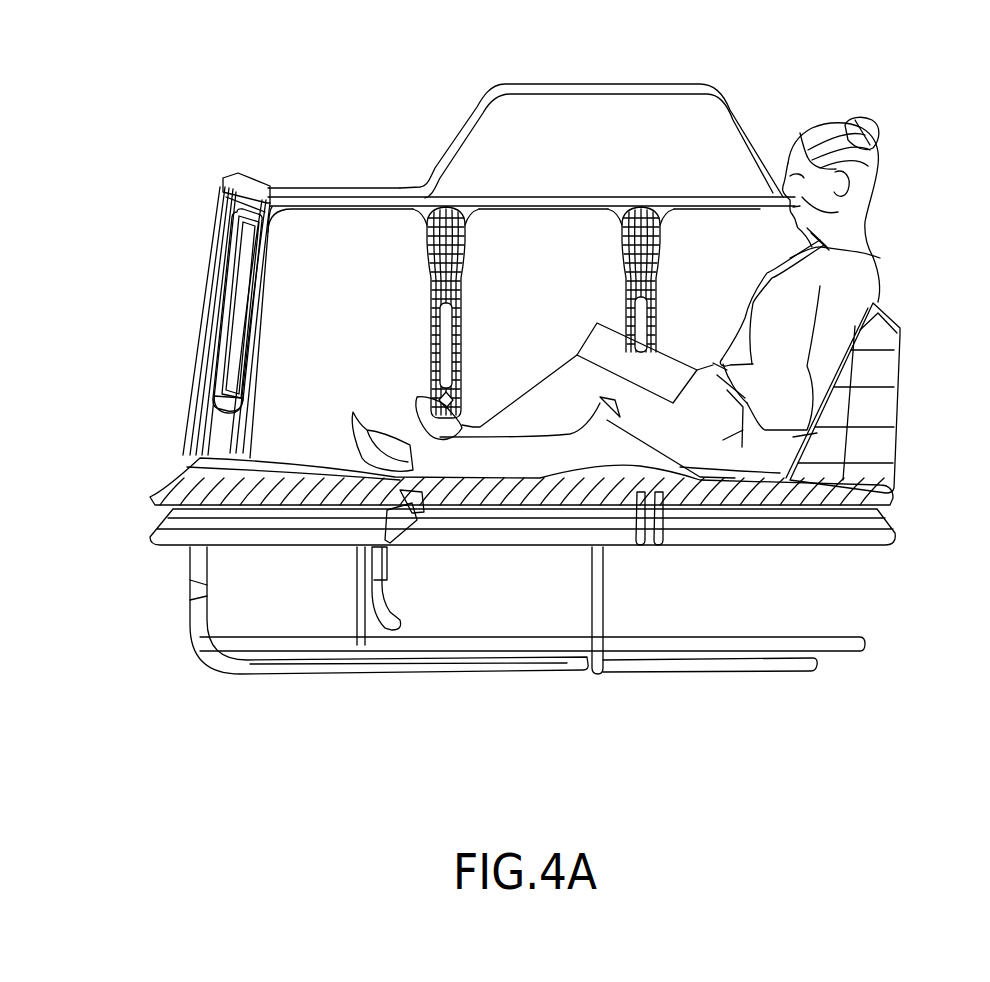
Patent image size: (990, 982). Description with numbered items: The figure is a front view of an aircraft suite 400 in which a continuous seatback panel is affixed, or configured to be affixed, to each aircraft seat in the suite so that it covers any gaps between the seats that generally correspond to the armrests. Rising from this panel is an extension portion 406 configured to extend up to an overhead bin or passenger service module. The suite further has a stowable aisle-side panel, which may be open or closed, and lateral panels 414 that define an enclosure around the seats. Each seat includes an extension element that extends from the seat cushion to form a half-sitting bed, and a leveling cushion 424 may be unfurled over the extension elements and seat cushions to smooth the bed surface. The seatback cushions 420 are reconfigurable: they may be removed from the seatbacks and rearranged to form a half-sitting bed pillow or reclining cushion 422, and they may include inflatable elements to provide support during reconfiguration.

The aircraft suite 400 is at (95, 57).
The extension portion 406 is at (558, 117).
The seatback cushions 420 is at (357, 233).
The lateral panels 414 is at (208, 432).
The leveling cushion 424 is at (160, 497).
The reclining cushion 422 is at (878, 410).